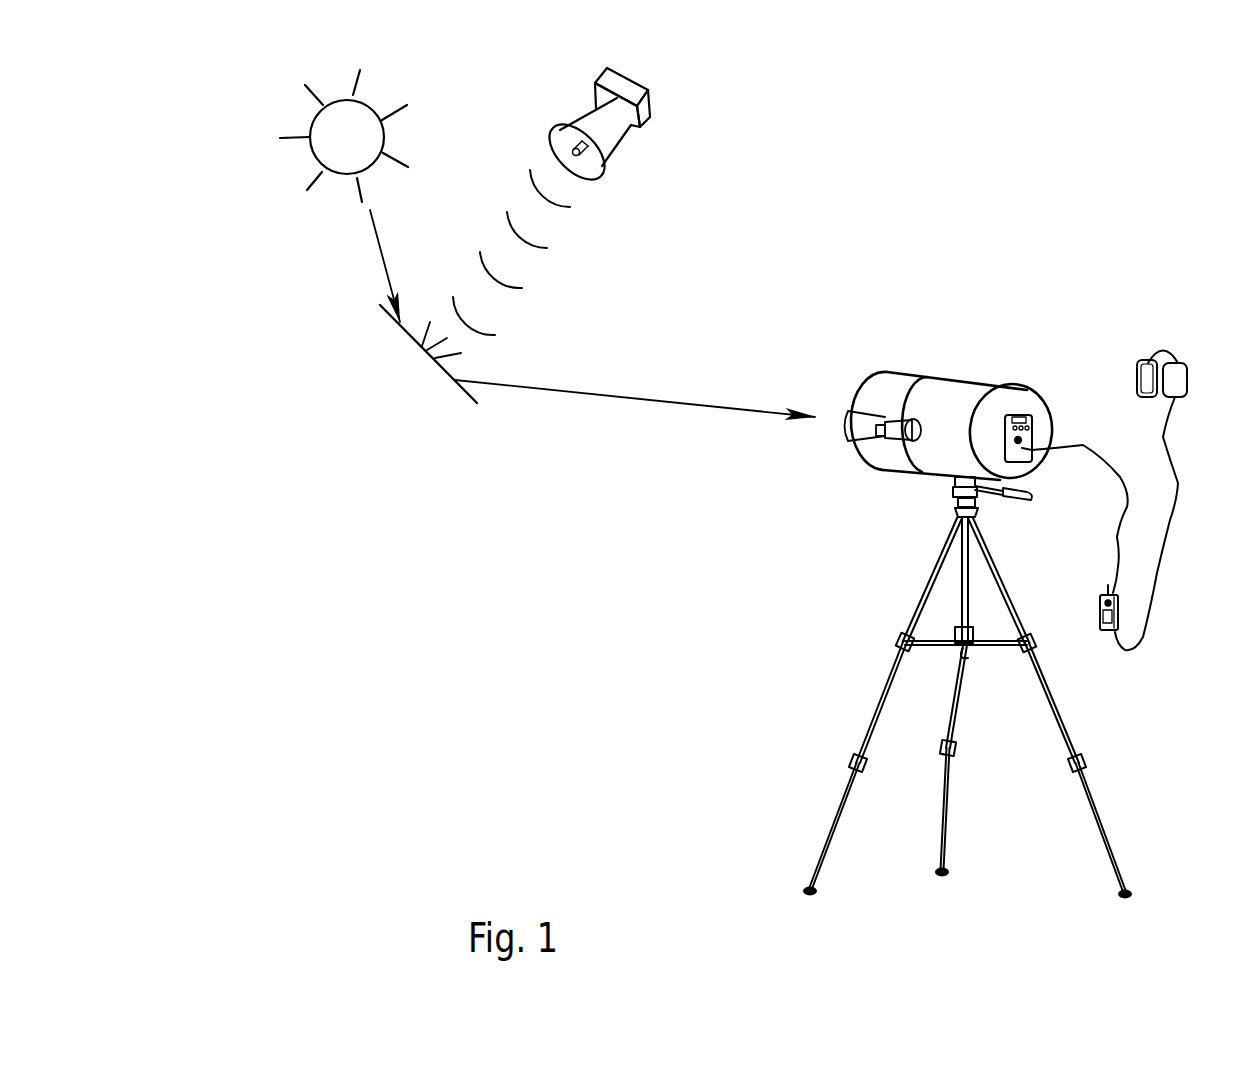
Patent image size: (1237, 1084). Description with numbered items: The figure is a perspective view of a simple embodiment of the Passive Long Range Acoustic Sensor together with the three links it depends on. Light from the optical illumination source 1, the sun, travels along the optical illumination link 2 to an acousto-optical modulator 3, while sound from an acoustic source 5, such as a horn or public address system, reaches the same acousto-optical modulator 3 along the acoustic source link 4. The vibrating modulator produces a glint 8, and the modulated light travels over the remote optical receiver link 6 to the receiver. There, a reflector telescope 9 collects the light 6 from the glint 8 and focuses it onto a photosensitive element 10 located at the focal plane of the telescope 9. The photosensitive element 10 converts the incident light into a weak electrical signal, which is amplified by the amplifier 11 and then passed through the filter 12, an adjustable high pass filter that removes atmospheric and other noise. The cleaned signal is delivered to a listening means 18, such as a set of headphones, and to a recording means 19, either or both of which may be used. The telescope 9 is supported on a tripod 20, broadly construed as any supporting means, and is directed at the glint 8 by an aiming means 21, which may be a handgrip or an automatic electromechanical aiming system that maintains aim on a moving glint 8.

The optical illumination source 1 is at (340, 138).
The optical illumination link 2 is at (368, 252).
The acousto-optical modulator 3 is at (402, 347).
The acoustic source link 4 is at (597, 215).
The acoustic source 5 is at (632, 90).
The remote optical receiver link 6 is at (613, 413).
The glint 8 is at (477, 358).
The telescope 9 is at (960, 397).
The photosensitive element 10 is at (1025, 440).
The amplifier 11 is at (1013, 413).
The filter 12 is at (1027, 415).
The listening means 18 is at (1175, 335).
The recording means 19 is at (1105, 637).
The tripod 20 is at (888, 635).
The aiming means 21 is at (1018, 508).